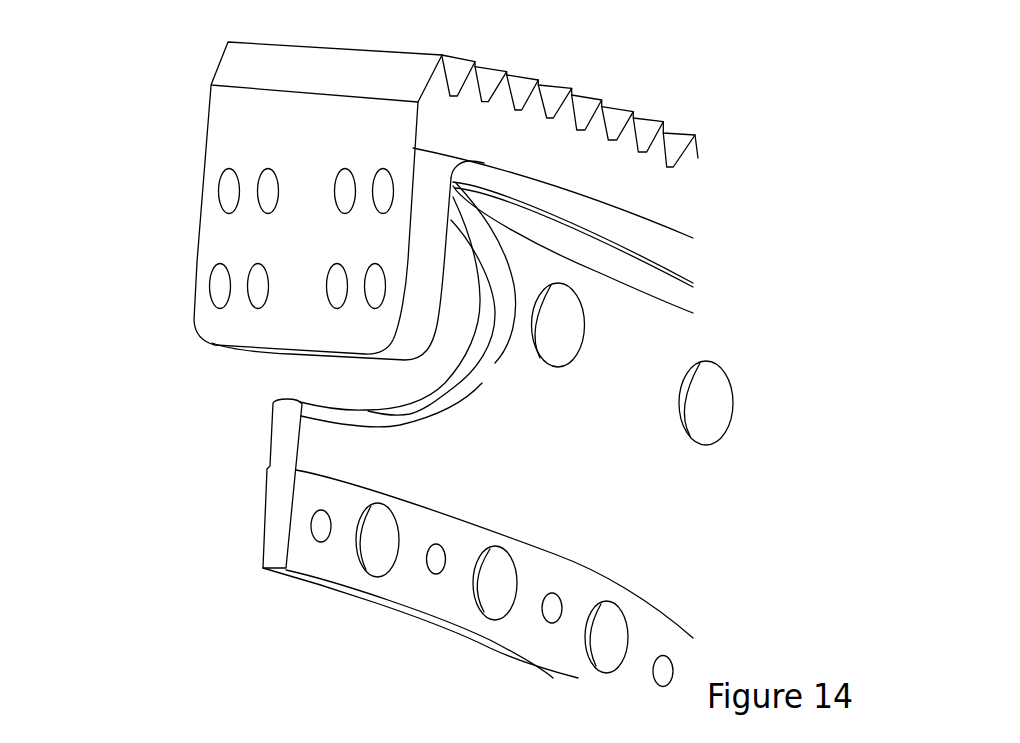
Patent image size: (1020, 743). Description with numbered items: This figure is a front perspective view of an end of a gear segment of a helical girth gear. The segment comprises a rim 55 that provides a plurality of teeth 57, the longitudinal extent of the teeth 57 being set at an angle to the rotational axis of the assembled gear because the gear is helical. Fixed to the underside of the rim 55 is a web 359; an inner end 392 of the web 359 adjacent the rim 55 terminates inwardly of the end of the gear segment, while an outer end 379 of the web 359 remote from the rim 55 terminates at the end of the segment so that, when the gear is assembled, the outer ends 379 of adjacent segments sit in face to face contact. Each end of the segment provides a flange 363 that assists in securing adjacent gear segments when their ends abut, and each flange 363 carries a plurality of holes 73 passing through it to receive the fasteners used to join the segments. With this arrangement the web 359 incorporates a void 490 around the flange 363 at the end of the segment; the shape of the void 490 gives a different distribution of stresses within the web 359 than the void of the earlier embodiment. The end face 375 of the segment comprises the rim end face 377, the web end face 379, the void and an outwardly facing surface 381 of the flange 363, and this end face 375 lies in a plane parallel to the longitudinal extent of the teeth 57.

The rim end face 377 is at (233, 108).
The flange 363 is at (228, 137).
The end face 375 is at (214, 213).
The holes 73 is at (220, 288).
The outwardly facing surface 381 is at (237, 318).
The inner end 392 is at (484, 163).
The teeth 57 is at (667, 131).
The rim 55 is at (662, 203).
The web 359 is at (647, 513).
The void 490 is at (308, 377).
The outer end 379 is at (278, 518).